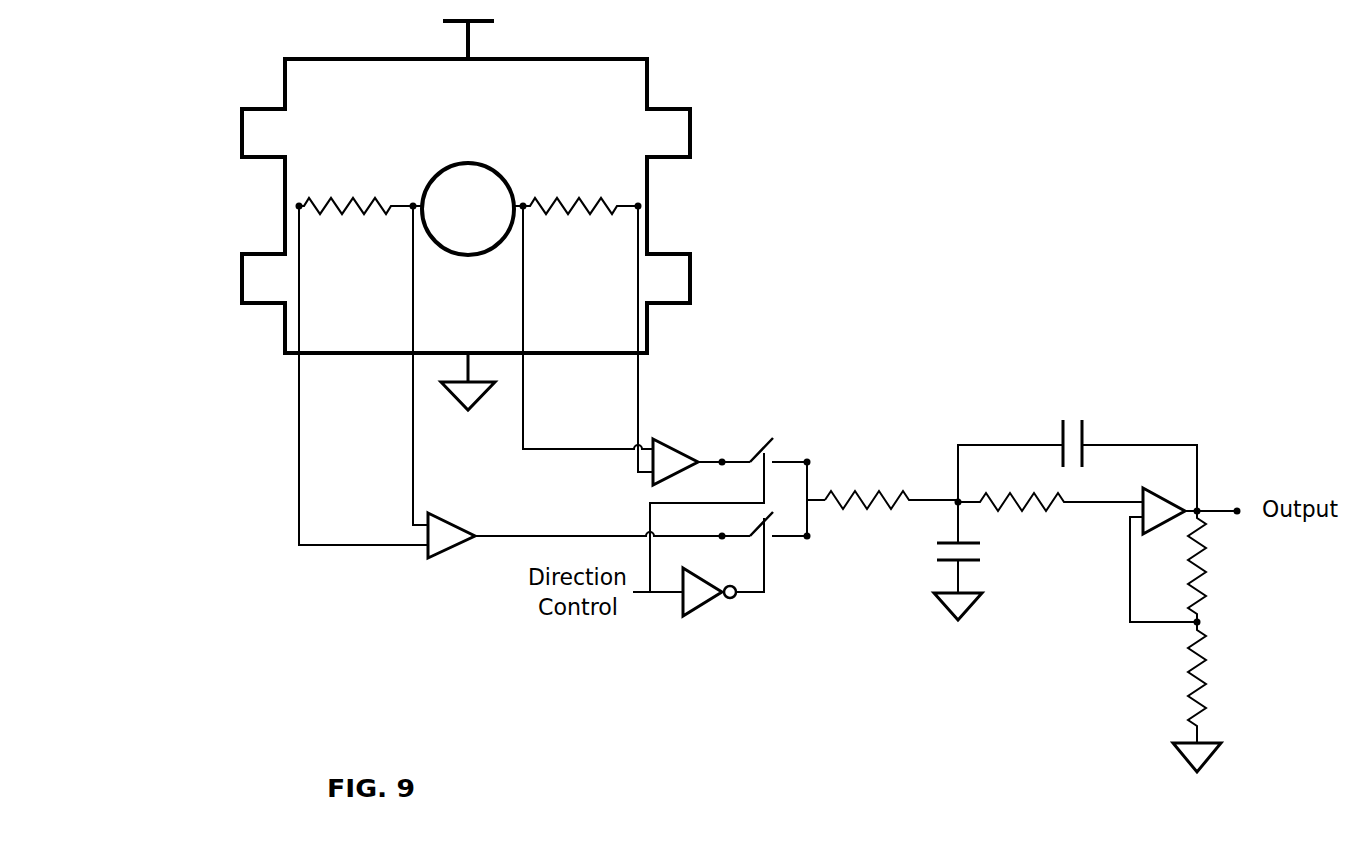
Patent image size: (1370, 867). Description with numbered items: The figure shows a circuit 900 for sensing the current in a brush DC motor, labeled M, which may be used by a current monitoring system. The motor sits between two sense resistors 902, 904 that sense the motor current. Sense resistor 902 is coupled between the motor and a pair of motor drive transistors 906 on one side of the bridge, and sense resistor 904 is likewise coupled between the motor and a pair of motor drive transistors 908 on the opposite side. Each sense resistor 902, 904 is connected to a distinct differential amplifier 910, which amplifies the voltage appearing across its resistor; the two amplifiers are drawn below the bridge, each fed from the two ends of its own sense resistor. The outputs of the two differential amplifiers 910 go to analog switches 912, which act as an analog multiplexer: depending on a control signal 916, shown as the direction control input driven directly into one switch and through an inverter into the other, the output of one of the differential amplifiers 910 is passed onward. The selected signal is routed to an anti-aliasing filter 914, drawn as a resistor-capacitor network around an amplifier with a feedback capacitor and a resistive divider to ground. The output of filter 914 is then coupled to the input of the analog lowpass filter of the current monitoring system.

The circuit 900 is at (960, 79).
The sense resistor 902 is at (348, 235).
The sense resistor 904 is at (568, 227).
The pair of motor drive transistors 906 is at (235, 277).
The pair of motor drive transistors 908 is at (720, 253).
The differential amplifier 910 is at (680, 432).
The analog switches 912 is at (795, 437).
The anti-aliasing filter 914 is at (1093, 395).
The control signal 916 is at (700, 620).